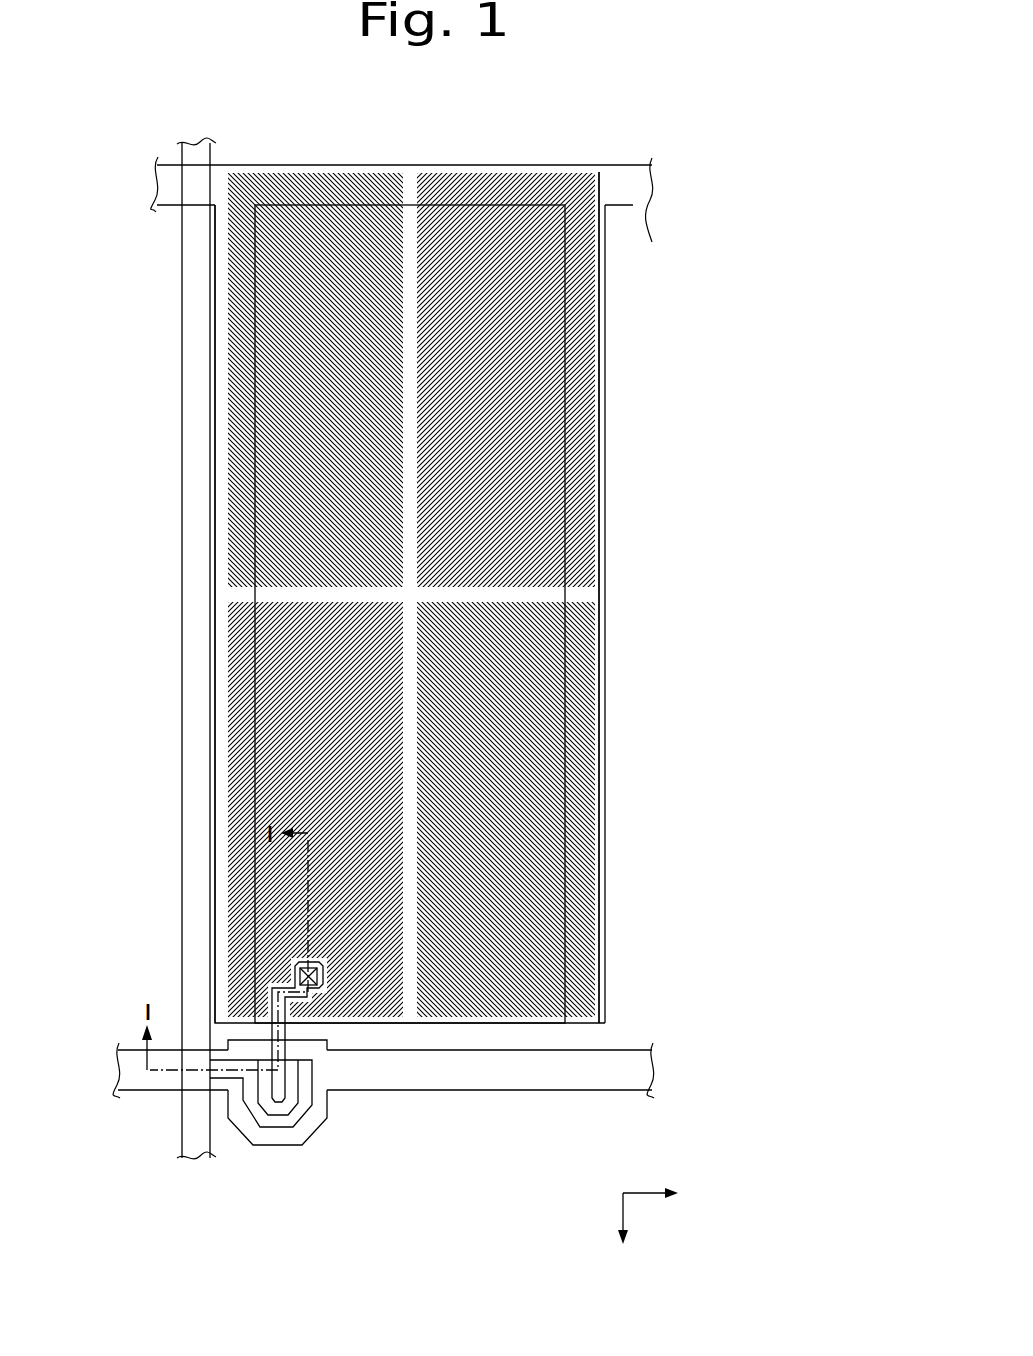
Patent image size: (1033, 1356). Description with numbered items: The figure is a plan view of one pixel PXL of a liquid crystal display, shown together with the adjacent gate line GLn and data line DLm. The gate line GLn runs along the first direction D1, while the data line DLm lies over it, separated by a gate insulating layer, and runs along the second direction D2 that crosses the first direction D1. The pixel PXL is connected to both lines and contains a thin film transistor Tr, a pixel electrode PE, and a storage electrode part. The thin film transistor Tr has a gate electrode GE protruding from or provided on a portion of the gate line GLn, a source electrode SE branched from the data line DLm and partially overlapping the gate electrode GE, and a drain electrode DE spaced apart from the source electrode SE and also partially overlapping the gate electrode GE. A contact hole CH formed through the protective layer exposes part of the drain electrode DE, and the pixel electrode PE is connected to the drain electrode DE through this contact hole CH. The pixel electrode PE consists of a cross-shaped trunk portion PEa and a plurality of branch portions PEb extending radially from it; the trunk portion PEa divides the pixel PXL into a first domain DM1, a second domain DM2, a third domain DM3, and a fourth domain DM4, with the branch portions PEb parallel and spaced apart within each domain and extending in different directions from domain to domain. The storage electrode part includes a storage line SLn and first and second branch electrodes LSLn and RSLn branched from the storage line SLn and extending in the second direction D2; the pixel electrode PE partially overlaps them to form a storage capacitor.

The pixel PXL is at (420, 151).
The data line DLm is at (194, 664).
The storage line SLn is at (628, 208).
The first branch electrode LSLn is at (211, 287).
The second branch electrode RSLn is at (600, 312).
The pixel electrode PE is at (700, 360).
The trunk portion PEa is at (412, 433).
The branch portions PEb is at (525, 385).
The first domain DM1 is at (292, 752).
The second domain DM2 is at (290, 510).
The third domain DM3 is at (530, 510).
The fourth domain DM4 is at (530, 745).
The contact hole CH is at (294, 976).
The gate line GLn is at (511, 1092).
The thin film transistor Tr is at (337, 1218).
The gate electrode GE is at (310, 1142).
The source electrode SE is at (271, 1128).
The drain electrode DE is at (277, 1104).
The first direction D1 is at (664, 1195).
The second direction D2 is at (624, 1233).